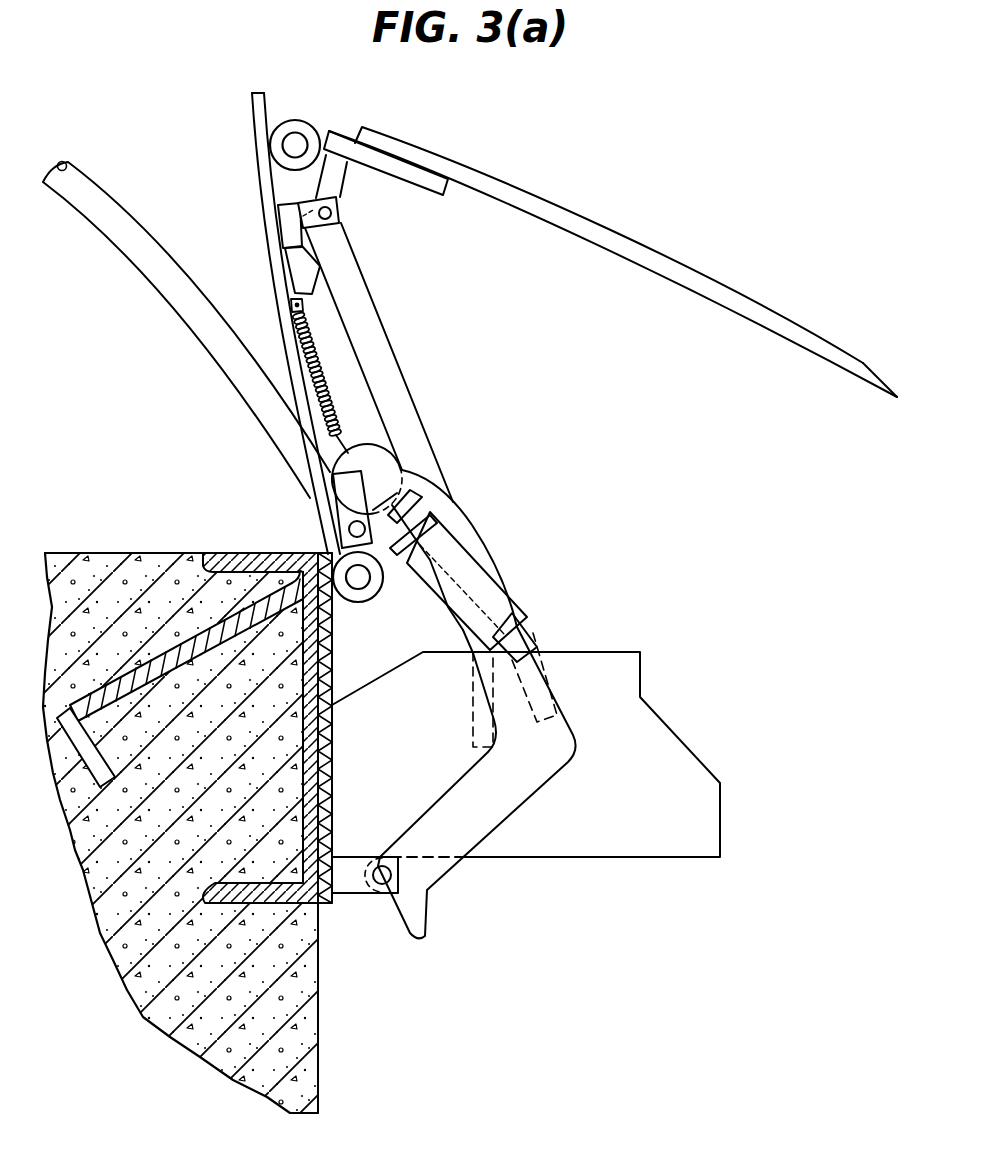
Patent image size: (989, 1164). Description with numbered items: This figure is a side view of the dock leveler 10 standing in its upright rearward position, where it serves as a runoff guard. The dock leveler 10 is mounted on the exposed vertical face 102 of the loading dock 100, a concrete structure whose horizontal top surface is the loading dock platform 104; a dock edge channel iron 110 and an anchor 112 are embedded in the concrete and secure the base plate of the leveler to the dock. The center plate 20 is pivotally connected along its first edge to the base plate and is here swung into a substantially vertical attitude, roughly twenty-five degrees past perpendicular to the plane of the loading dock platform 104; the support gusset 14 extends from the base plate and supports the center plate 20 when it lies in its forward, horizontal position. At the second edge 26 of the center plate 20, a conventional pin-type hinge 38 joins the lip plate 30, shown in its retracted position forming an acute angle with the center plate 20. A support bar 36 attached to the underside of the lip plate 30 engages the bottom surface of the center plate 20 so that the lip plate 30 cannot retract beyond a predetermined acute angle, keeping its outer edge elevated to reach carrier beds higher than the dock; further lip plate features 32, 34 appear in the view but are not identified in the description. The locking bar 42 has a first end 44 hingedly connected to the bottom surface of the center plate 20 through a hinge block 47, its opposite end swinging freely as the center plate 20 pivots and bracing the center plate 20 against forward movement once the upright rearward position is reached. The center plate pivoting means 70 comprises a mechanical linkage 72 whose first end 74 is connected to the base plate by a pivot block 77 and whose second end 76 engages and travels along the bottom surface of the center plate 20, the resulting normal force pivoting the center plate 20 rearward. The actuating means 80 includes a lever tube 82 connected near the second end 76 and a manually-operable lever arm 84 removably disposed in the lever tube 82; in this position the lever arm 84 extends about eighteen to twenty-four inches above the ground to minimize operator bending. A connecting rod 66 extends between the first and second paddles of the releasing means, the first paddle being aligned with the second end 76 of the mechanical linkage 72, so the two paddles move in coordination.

The dock leveler 10 is at (778, 600).
The support gusset 14 is at (706, 840).
The center plate 20 is at (258, 165).
The second edge 26 is at (254, 92).
The lip plate 30 is at (620, 237).
The blade holder 32 is at (362, 128).
The blade tip 34 is at (873, 367).
The support bar 36 is at (350, 190).
The pin-type hinge 38 is at (310, 120).
The locking bar 42 is at (413, 420).
The first end 44 is at (342, 222).
The hinge block 47 is at (280, 220).
The connecting rod 66 is at (340, 527).
The center plate pivoting means 70 is at (527, 528).
The mechanical linkage 72 is at (563, 760).
The first end 74 is at (392, 897).
The second end 76 is at (403, 470).
The pivot block 77 is at (356, 897).
The actuating means 80 is at (165, 323).
The lever tube 82 is at (512, 595).
The lever arm 84 is at (104, 240).
The loading dock 100 is at (143, 531).
The exposed vertical face 102 is at (318, 1040).
The loading dock platform 104 is at (97, 552).
The dock edge channel iron 110 is at (120, 966).
The anchor 112 is at (80, 787).